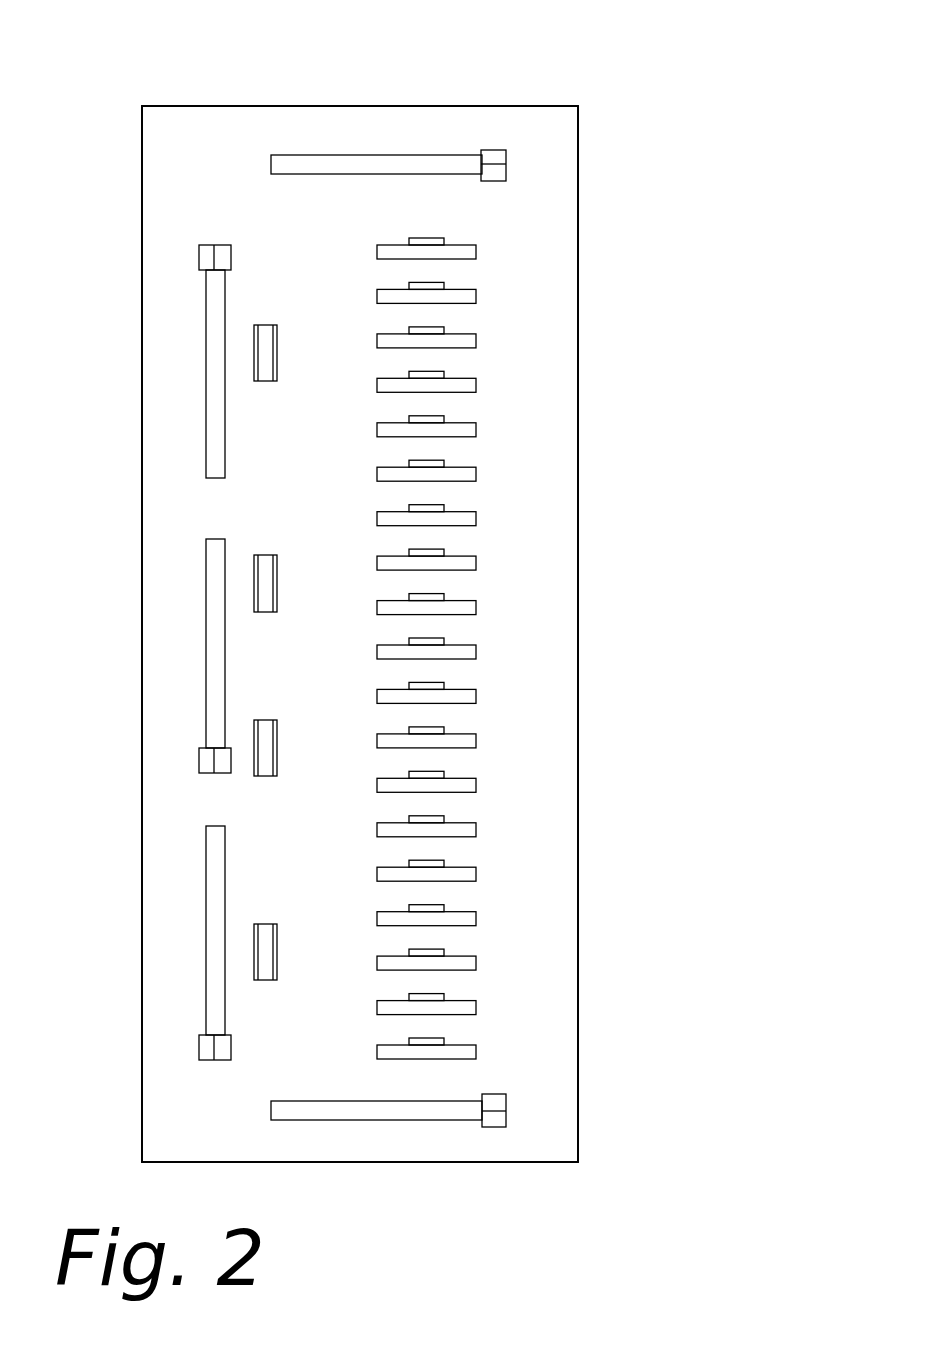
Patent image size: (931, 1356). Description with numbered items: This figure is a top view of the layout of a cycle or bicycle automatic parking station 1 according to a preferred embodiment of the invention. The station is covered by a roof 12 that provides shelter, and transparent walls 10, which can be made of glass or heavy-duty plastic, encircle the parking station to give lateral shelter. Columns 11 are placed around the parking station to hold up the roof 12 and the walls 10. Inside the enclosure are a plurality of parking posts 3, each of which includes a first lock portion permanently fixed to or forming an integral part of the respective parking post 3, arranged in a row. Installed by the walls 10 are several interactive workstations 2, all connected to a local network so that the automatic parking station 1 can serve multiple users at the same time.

The automatic parking station 1 is at (730, 124).
The interactive workstation 2 is at (267, 330).
The parking post 3 is at (476, 430).
The transparent wall 10 is at (326, 163).
The column 11 is at (494, 155).
The roof 12 is at (546, 1051).